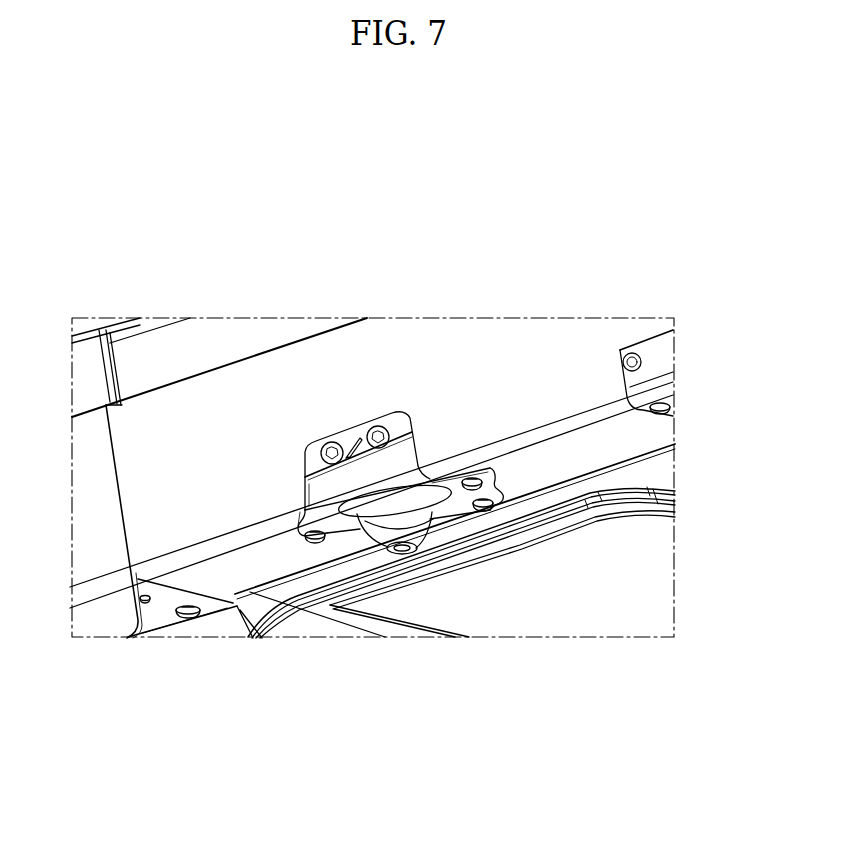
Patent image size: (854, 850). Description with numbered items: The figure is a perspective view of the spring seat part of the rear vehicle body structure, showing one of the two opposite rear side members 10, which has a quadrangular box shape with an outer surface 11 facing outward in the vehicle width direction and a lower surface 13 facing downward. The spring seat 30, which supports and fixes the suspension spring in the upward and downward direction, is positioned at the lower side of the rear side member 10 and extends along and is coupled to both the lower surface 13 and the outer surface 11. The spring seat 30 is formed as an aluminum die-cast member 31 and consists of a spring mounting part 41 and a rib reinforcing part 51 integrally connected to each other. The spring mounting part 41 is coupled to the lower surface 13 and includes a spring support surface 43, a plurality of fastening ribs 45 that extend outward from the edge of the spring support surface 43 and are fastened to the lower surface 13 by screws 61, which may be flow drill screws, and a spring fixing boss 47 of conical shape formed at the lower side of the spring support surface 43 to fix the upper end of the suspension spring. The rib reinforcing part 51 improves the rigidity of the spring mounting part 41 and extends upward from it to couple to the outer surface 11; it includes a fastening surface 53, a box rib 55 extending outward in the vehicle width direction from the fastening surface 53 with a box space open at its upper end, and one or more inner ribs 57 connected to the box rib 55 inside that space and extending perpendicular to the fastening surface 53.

The rear side member 10 is at (253, 382).
The outer surface 11 is at (460, 367).
The lower surface 13 is at (610, 440).
The spring seat 30 is at (366, 182).
The aluminum die-cast member 31 is at (237, 619).
The spring mounting part 41 is at (347, 538).
The spring support surface 43 is at (457, 495).
The fastening rib 45 is at (490, 470).
The spring fixing boss 47 is at (378, 548).
The rib reinforcing part 51 is at (299, 494).
The fastening surface 53 is at (397, 425).
The box rib 55 is at (304, 450).
The inner rib 57 is at (345, 452).
The screw 61 is at (366, 424).